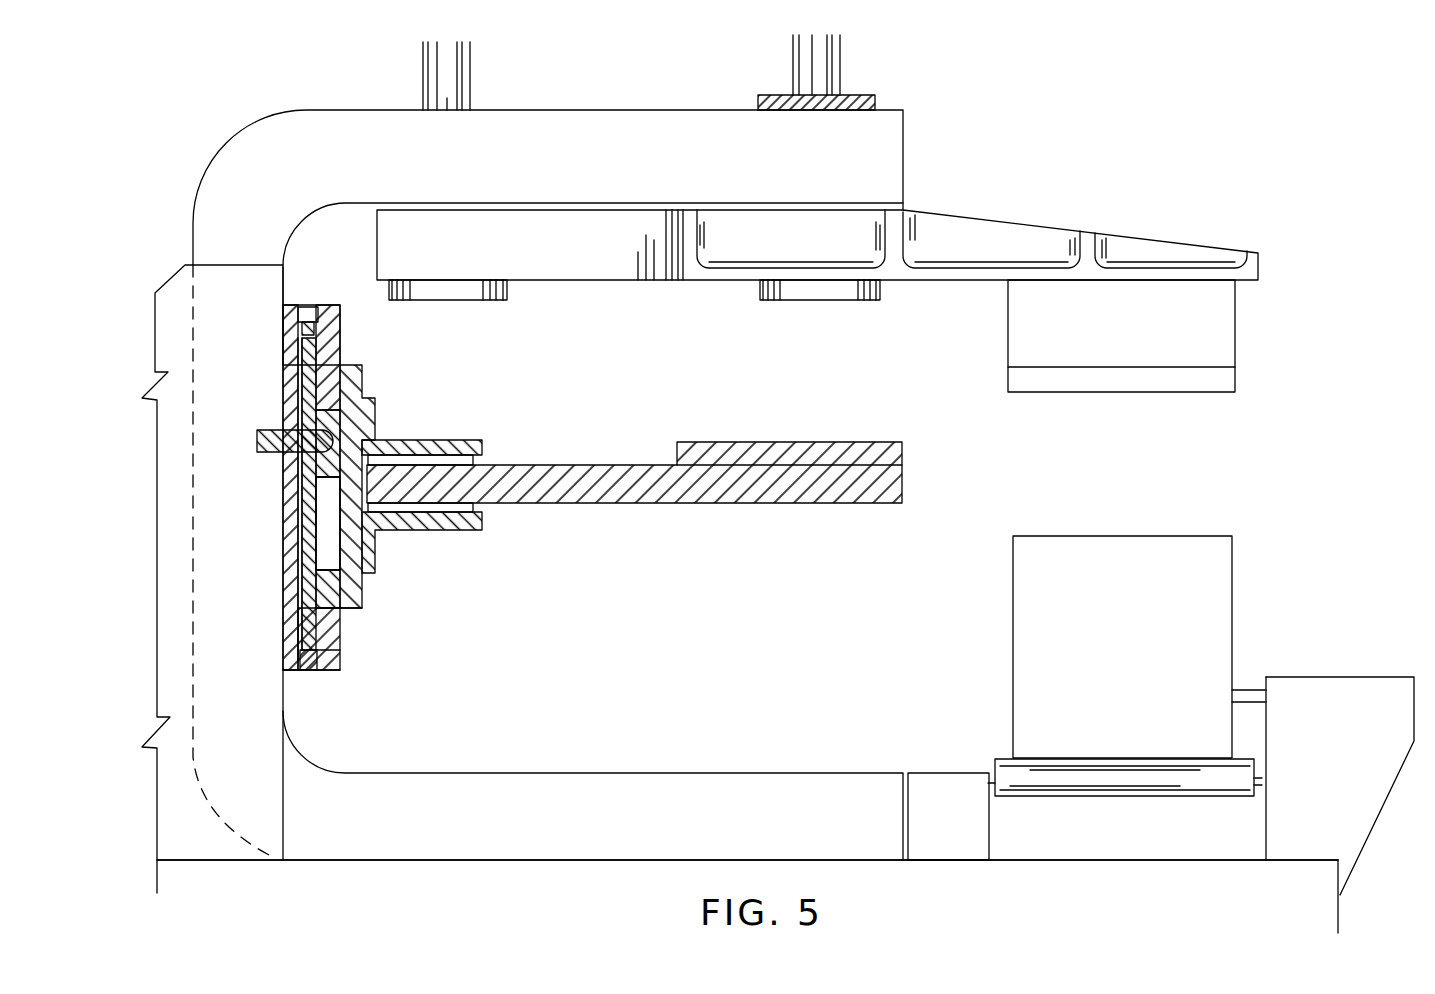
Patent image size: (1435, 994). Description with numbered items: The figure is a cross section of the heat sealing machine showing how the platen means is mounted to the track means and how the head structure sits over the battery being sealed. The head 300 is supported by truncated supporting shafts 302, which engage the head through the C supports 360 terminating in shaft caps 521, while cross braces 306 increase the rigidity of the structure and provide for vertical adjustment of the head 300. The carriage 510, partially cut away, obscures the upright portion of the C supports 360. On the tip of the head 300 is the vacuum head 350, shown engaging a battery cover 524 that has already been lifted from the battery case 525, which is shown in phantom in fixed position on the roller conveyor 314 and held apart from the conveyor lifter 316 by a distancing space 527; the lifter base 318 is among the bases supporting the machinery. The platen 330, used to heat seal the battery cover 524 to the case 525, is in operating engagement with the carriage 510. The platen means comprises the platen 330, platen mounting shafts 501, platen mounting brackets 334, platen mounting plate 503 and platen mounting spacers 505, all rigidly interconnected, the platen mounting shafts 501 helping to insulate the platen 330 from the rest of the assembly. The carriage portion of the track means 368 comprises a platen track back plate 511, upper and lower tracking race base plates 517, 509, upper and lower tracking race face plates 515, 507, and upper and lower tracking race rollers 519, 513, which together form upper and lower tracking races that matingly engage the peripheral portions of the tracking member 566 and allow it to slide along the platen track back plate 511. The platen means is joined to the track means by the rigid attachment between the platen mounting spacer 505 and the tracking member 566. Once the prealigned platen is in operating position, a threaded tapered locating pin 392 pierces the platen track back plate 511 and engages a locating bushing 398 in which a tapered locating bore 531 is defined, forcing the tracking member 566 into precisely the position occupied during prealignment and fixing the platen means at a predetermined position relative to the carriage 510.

The head 300 is at (1003, 233).
The truncated supporting shafts 302 is at (456, 78).
The cross braces 306 is at (878, 98).
The roller conveyor 314 is at (1148, 800).
The conveyor lifter 316 is at (960, 838).
The lifter base 318 is at (1123, 908).
The platen 330 is at (905, 475).
The platen mounting brackets 334 is at (466, 447).
The vacuum head 350 is at (1138, 339).
The C supports 360 is at (581, 171).
The carriage portion of the track means 368 is at (281, 580).
The locating pin 392 is at (270, 430).
The locating bushing 398 is at (330, 465).
The platen mounting shafts 501 is at (471, 462).
The platen mounting plate 503 is at (358, 598).
The platen mounting spacers 505 is at (344, 607).
The lower tracking race face plate 507 is at (338, 665).
The lower tracking race base plate 509 is at (300, 670).
The carriage 510 is at (180, 293).
The platen track back plate 511 is at (290, 512).
The lower tracking race roller 513 is at (285, 672).
The upper tracking race face plate 515 is at (336, 338).
The upper tracking race base plate 517 is at (305, 322).
The upper tracking race roller 519 is at (298, 308).
The shaft caps 521 is at (440, 293).
The battery cover 524 is at (1225, 380).
The battery case 525 is at (1148, 643).
The distancing space 527 is at (1245, 695).
The tapered locating bore 531 is at (366, 432).
The tracking member 566 is at (340, 635).